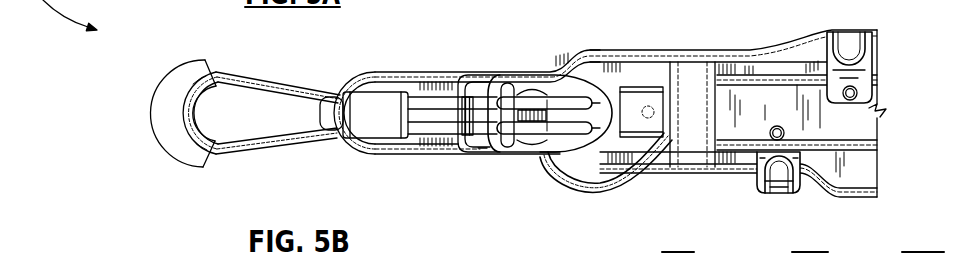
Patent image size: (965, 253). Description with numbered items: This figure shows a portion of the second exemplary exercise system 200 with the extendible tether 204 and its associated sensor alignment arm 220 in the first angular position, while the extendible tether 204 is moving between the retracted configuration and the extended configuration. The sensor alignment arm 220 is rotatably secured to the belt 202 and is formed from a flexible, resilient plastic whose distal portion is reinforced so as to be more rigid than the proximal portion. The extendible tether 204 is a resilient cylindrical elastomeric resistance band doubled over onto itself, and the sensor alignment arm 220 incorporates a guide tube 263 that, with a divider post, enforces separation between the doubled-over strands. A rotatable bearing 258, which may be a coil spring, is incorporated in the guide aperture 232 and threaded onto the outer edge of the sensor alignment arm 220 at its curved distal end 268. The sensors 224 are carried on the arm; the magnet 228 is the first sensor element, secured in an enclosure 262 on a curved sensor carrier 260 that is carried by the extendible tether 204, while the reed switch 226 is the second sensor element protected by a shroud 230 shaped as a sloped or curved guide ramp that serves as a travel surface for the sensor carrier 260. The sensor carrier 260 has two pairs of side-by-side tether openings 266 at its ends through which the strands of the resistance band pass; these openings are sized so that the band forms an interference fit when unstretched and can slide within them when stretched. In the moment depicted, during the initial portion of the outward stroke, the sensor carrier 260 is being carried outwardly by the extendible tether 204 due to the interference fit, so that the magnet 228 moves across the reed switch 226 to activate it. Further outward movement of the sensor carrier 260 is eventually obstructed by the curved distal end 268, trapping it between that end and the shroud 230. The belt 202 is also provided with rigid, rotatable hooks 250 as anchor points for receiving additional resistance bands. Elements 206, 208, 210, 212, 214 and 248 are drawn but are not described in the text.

The second exemplary exercise system 200 is at (68, 249).
The belt 202 is at (747, 49).
The extendible tether 204 is at (490, 86).
The housing wall 206 is at (626, 72).
The mounting panel 208 is at (778, 100).
The cross post 210 is at (693, 155).
The hook 212 is at (222, 55).
The hook grip 214 is at (177, 128).
The sensor alignment arm 220 is at (486, 84).
The sensor 224 is at (527, 155).
The reed switch 226 is at (533, 117).
The magnet 228 is at (522, 149).
The shroud 230 is at (549, 99).
The guide aperture 232 is at (470, 72).
The base 248 is at (538, 152).
The hook 250 is at (848, 50).
The rotatable bearing 258 is at (418, 149).
The sensor carrier 260 is at (588, 88).
The enclosure 262 is at (556, 191).
The guide tube 263 is at (655, 100).
The tether openings 266 is at (612, 130).
The distal end 268 is at (447, 98).